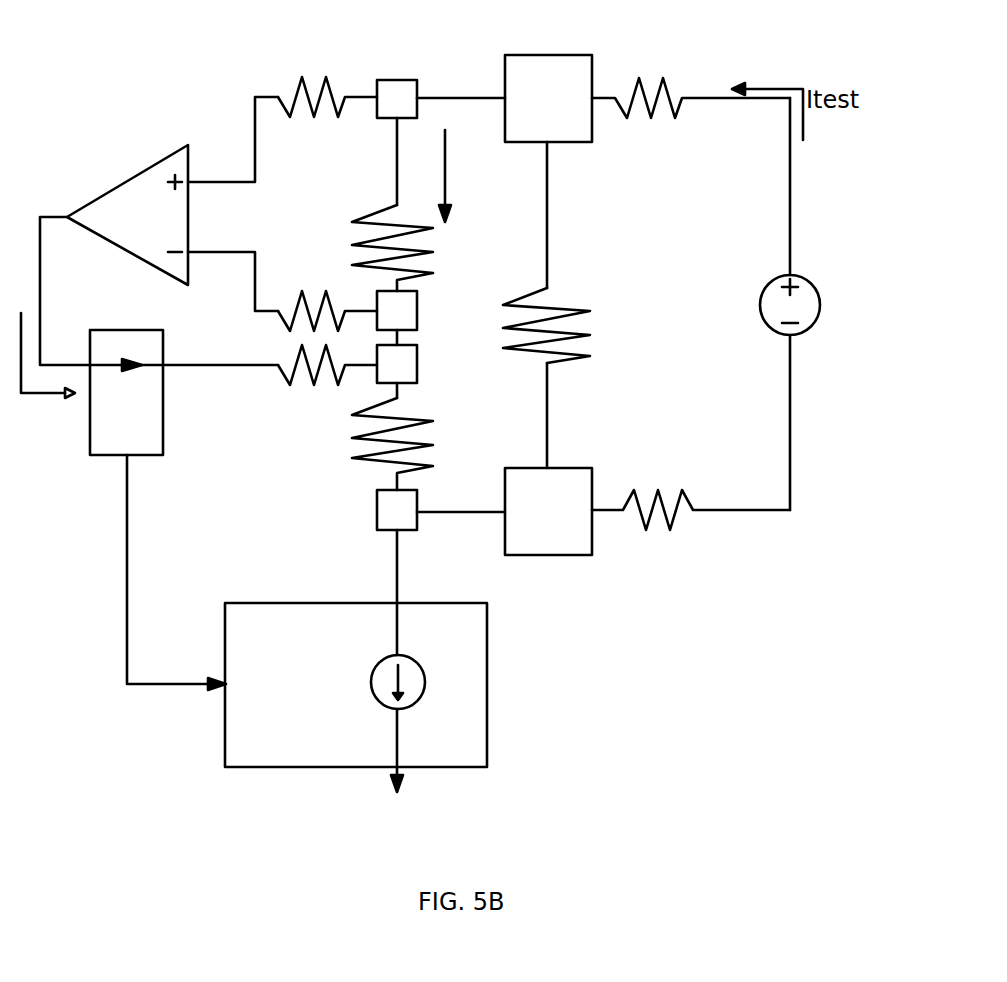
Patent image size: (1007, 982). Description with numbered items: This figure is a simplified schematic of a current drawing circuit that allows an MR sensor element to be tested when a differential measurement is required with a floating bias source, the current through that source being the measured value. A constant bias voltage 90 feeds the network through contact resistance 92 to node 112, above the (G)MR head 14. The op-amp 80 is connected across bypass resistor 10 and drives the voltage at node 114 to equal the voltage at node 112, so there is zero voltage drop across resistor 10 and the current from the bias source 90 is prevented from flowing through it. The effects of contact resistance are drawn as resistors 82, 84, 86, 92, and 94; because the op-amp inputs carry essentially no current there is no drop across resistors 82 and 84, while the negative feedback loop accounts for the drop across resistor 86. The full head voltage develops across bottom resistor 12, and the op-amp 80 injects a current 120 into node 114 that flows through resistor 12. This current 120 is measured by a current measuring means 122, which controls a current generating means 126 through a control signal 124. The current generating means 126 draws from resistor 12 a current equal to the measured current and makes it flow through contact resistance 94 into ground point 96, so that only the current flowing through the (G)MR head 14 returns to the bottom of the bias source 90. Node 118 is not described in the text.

The bypass resistor 10 is at (382, 206).
The bottom resistor 12 is at (367, 462).
The (G)MR head 14 is at (570, 305).
The op-amp 80 is at (123, 182).
The contact resistance resistor 82 is at (304, 92).
The contact resistance resistor 84 is at (294, 298).
The contact resistance resistor 86 is at (276, 382).
The bias voltage source 90 is at (806, 276).
The contact resistance resistor 92 is at (662, 82).
The contact resistance resistor 94 is at (650, 530).
The ground point 96 is at (398, 786).
The node 112 is at (550, 74).
The node 114 is at (407, 370).
The terminal node 118 is at (415, 530).
The current 120 is at (25, 396).
The current measuring means 122 is at (97, 440).
The control signal 124 is at (160, 688).
The current generating means 126 is at (297, 769).